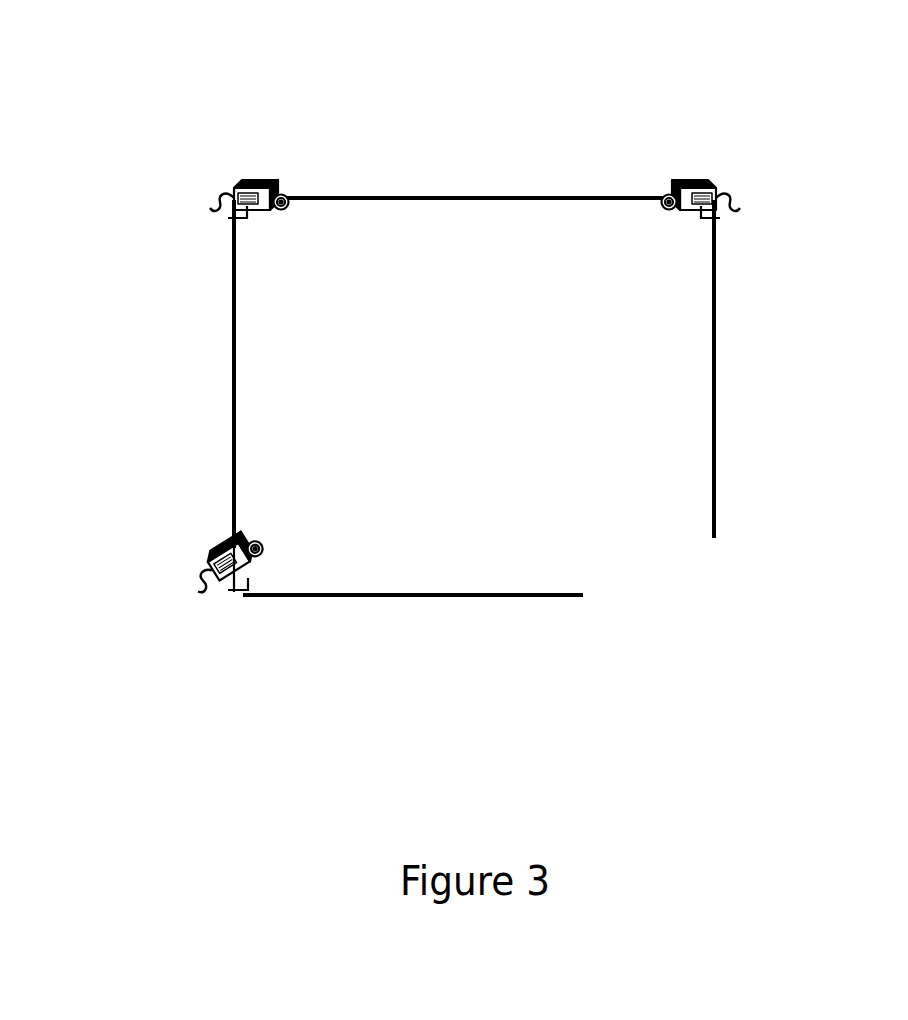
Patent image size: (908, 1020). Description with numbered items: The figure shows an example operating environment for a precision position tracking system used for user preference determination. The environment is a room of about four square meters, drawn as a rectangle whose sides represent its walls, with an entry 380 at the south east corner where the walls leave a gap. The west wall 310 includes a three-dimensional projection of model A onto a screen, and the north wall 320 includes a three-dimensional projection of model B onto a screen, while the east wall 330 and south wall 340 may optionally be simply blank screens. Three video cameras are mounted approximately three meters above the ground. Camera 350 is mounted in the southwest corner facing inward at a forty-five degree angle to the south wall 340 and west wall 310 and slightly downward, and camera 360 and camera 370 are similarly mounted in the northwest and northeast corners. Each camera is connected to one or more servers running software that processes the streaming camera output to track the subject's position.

The west wall 310 is at (234, 373).
The north wall 320 is at (528, 198).
The east wall 330 is at (714, 410).
The south wall 340 is at (447, 595).
The camera 350 is at (238, 575).
The camera 360 is at (237, 172).
The camera 370 is at (690, 173).
The entry 380 is at (678, 589).